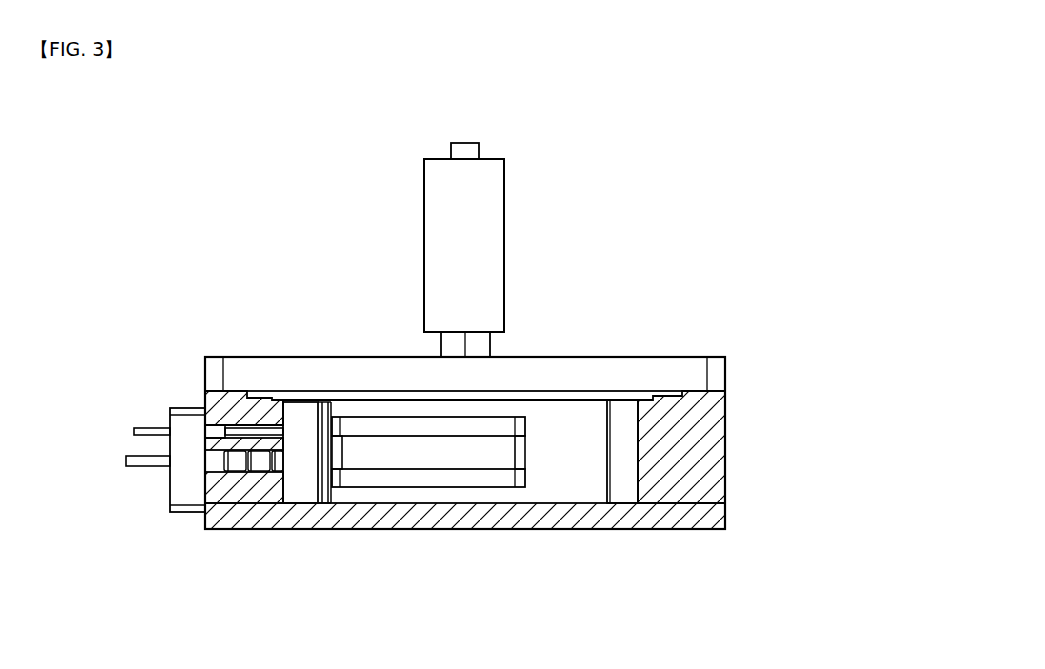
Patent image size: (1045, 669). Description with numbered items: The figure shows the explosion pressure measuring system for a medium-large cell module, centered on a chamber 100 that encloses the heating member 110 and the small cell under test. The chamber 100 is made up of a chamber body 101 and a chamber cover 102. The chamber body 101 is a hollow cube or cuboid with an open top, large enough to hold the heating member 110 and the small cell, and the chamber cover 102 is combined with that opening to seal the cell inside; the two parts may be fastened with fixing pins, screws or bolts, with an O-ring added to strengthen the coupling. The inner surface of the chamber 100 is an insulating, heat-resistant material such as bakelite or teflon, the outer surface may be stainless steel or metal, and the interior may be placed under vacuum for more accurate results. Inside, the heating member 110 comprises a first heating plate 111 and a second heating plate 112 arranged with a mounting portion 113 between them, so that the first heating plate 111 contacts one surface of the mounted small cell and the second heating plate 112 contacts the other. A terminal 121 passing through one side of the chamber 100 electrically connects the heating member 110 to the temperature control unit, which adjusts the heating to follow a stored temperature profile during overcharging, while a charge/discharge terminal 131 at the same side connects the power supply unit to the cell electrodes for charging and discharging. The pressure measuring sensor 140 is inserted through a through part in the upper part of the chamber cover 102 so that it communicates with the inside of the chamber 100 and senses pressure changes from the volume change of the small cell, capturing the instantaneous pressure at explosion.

The chamber 100 is at (848, 363).
The chamber body 101 is at (698, 445).
The chamber cover 102 is at (700, 377).
The heating member 110 is at (428, 542).
The first heating plate 111 is at (493, 478).
The second heating plate 112 is at (413, 427).
The mounting portion 113 is at (383, 456).
The terminal 121 is at (138, 427).
The charge/discharge terminal 131 is at (130, 467).
The pressure measuring sensor 140 is at (495, 246).